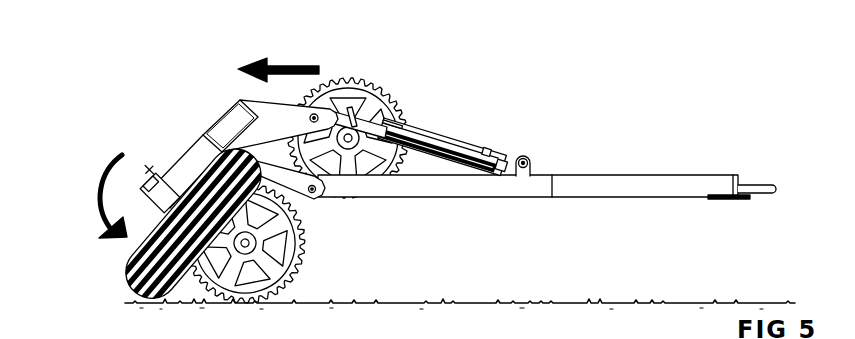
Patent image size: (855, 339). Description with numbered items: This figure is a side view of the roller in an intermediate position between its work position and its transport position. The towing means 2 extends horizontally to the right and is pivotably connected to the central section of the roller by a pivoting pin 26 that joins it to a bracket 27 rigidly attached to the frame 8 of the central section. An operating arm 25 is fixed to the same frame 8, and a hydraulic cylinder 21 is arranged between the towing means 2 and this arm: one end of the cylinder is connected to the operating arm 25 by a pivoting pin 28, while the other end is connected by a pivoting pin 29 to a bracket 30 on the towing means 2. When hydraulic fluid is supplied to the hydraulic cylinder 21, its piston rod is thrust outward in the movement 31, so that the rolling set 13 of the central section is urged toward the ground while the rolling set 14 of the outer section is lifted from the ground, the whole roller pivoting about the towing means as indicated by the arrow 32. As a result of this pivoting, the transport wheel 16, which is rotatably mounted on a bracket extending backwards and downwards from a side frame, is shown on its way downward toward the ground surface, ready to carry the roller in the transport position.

The towing means 2 is at (624, 184).
The frame of the central section 8 is at (222, 131).
The rolling set of the central section 13 is at (283, 258).
The rolling set of the right hand side section 14 is at (372, 108).
The transport wheel 16 is at (136, 280).
The hydraulic cylinder 21 is at (437, 140).
The operating arm 25 is at (282, 120).
The pivoting pin 26 is at (318, 191).
The bracket 27 is at (290, 176).
The pivoting pin 28 is at (316, 114).
The pivoting pin 29 is at (524, 158).
The bracket 30 is at (531, 164).
The movement 31 is at (289, 65).
The arrow 32 is at (100, 181).